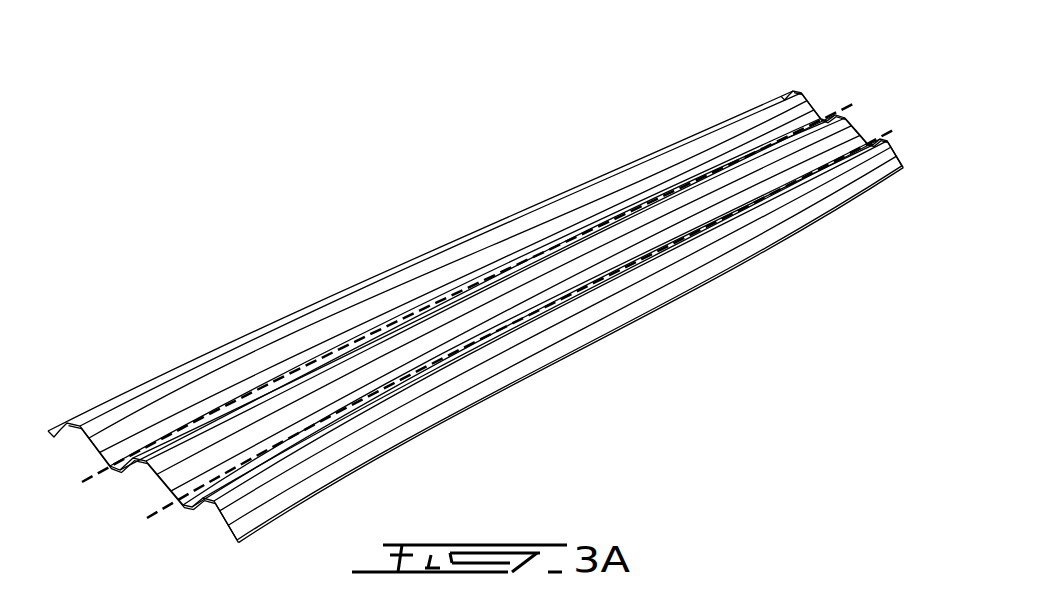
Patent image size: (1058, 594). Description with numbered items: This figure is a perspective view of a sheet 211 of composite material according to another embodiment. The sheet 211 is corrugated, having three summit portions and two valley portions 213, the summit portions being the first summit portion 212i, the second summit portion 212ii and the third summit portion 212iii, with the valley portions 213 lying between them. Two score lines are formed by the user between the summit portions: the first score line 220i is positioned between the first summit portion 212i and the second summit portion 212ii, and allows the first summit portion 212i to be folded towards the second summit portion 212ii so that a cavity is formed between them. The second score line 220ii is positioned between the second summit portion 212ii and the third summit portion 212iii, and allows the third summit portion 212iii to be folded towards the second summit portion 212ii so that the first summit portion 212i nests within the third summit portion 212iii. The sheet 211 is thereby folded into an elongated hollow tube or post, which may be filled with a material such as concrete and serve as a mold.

The sheet 211 is at (501, 273).
The first summit portion 212i is at (817, 180).
The second summit portion 212ii is at (835, 125).
The third summit portion 212iii is at (368, 298).
The valley portion 213 is at (805, 122).
The first score line 220i is at (557, 312).
The second score line 220ii is at (655, 197).